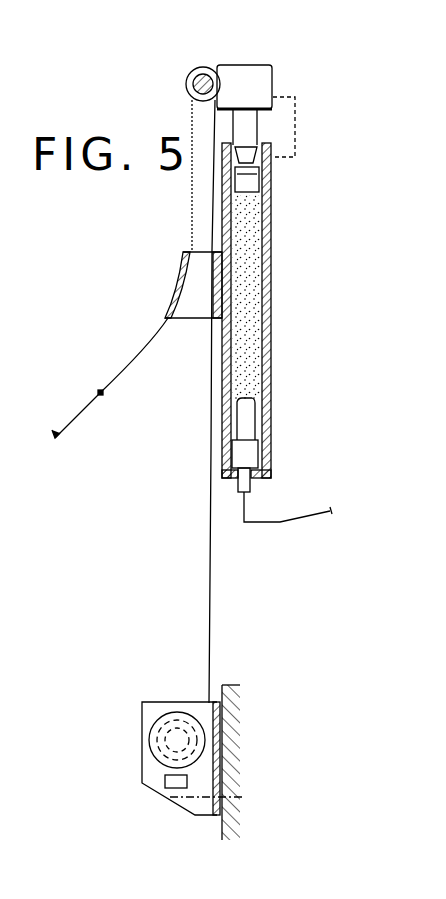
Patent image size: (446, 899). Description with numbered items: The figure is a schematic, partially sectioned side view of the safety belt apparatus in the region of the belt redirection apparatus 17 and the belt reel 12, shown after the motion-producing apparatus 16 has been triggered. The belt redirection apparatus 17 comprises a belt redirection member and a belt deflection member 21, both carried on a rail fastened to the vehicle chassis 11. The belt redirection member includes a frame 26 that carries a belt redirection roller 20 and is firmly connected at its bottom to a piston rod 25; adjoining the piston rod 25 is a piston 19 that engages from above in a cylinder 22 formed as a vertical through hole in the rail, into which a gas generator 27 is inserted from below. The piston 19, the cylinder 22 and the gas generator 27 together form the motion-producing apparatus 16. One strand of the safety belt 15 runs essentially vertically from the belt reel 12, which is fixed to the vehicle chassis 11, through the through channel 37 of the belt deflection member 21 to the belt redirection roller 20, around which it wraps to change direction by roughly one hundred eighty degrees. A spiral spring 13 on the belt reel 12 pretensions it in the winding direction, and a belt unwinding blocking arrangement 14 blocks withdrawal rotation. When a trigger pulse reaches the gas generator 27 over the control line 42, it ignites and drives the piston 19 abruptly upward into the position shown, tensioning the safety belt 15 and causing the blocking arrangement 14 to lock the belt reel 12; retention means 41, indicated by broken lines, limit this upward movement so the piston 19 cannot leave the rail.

The vehicle chassis 11 is at (232, 735).
The belt reel 12 is at (148, 747).
The spiral spring 13 is at (171, 718).
The belt unwinding blocking arrangement 14 is at (168, 789).
The safety belt 15 is at (132, 362).
The motion-producing apparatus 16 is at (286, 317).
The belt redirection apparatus 17 is at (222, 66).
The piston 19 is at (258, 171).
The belt redirection roller 20 is at (193, 63).
The belt deflection member 21 is at (175, 293).
The cylinder 22 is at (248, 366).
The piston rod 25 is at (250, 125).
The frame 26 is at (276, 80).
The gas generator 27 is at (245, 456).
The through channel 37 is at (198, 307).
The retention means 41 is at (298, 134).
The control line 42 is at (282, 523).